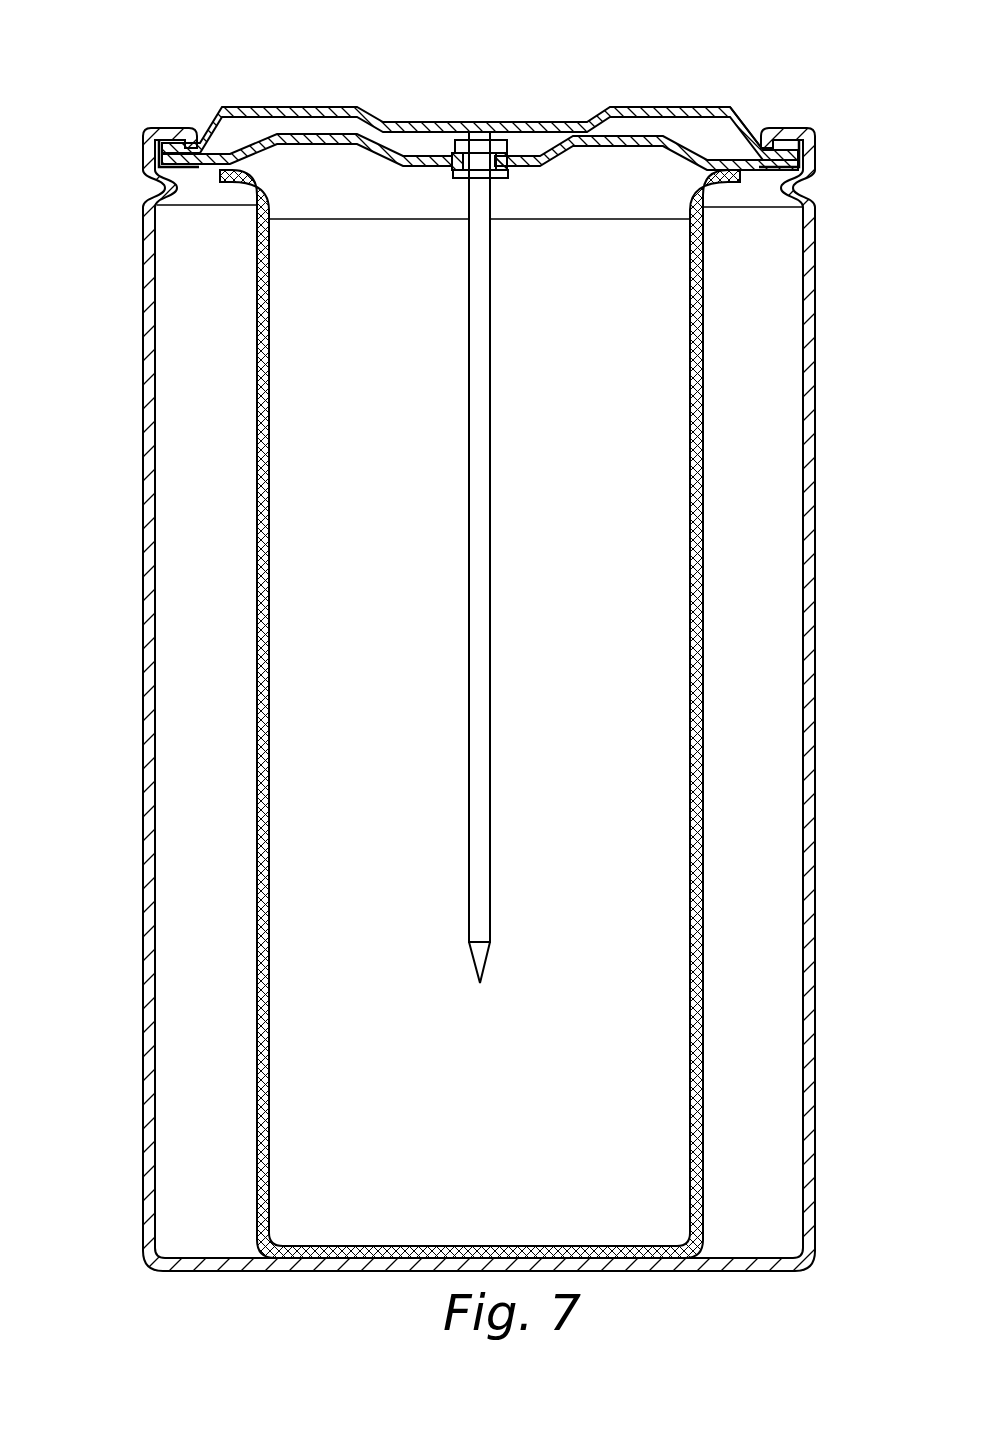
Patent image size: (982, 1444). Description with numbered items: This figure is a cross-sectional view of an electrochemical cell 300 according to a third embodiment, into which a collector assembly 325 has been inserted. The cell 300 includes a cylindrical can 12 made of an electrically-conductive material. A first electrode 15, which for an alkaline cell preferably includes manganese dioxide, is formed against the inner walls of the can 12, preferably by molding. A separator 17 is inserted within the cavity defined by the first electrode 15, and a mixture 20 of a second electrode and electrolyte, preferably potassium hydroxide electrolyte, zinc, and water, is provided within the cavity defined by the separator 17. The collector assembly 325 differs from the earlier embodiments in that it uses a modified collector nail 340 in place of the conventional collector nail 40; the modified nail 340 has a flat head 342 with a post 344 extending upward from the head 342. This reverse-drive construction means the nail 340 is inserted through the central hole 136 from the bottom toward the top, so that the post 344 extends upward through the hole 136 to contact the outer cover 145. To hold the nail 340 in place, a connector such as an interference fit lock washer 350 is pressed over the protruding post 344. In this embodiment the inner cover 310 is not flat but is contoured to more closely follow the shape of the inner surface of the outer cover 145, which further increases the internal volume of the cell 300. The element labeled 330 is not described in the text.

The can 12 is at (815, 388).
The first electrode 15 is at (185, 532).
The separator 17 is at (700, 612).
The mixture 20 is at (607, 720).
The collector nail 40 is at (488, 810).
The central hole 136 is at (490, 178).
The outer cover 145 is at (295, 107).
The cell 300 is at (587, 66).
The inner cover 310 is at (680, 138).
The collector assembly 325 is at (113, 127).
The vent plate 330 is at (690, 163).
The collector nail 340 is at (477, 290).
The flat head 342 is at (457, 178).
The post 344 is at (483, 132).
The lock washer 350 is at (455, 142).